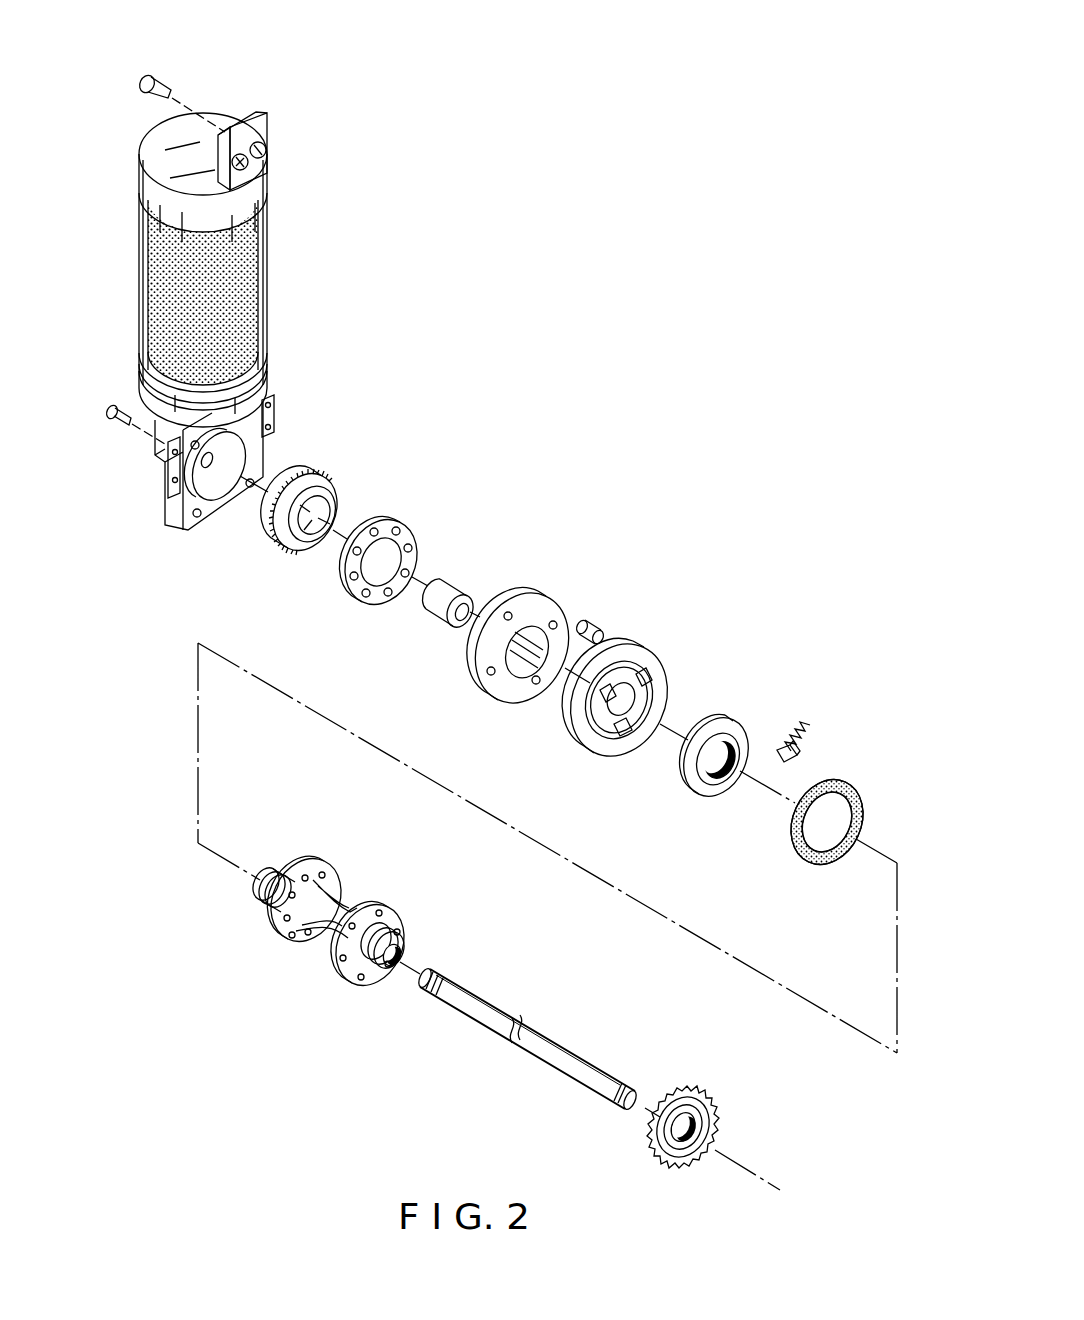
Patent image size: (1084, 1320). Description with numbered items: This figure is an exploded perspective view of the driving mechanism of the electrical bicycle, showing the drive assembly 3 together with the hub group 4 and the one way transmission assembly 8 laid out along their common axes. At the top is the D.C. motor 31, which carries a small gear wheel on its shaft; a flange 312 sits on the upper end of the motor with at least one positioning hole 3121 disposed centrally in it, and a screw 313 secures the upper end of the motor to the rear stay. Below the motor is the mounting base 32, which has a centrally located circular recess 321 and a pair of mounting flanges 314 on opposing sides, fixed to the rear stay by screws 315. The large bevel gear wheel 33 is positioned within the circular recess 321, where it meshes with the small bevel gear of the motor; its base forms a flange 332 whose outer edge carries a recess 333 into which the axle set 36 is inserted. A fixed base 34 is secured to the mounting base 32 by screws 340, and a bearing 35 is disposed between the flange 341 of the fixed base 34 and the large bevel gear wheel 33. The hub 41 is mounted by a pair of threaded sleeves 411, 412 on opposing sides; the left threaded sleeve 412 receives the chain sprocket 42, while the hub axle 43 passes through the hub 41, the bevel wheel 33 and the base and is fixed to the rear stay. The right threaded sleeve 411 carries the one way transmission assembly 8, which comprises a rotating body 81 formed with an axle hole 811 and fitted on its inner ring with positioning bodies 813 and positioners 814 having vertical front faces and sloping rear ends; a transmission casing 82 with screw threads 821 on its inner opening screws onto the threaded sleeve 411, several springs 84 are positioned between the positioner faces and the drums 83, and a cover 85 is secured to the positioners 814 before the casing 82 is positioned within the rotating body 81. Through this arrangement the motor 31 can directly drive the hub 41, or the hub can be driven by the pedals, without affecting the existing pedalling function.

The drive assembly 3 is at (490, 723).
The D.C. motor 31 is at (257, 250).
The flange 312 is at (267, 120).
The positioning hole 3121 is at (268, 149).
The screw 313 is at (156, 78).
The mounting flanges 314 is at (268, 405).
The screws 315 is at (112, 420).
The mounting base 32 is at (253, 452).
The circular recess 321 is at (222, 478).
The large bevel gear wheel 33 is at (293, 473).
The flange 332 is at (332, 497).
The recess 333 is at (342, 520).
The fixed base 34 is at (537, 607).
The screws 340 is at (588, 623).
The flange 341 is at (503, 597).
The bearing 35 is at (410, 533).
The axle set 36 is at (457, 580).
The one way transmission assembly 8 is at (820, 910).
The rotating body 81 is at (640, 647).
The axle hole 811 is at (632, 707).
The pawl 813 is at (640, 685).
The positioners 814 is at (622, 745).
The transmission casing 82 is at (720, 713).
The screw threads 821 is at (720, 787).
The drums 83 is at (797, 752).
The springs 84 is at (801, 721).
The cover 85 is at (837, 780).
The wheel hub assembly 4 is at (677, 1187).
The hub 41 is at (340, 900).
The threaded sleeve 411 is at (277, 863).
The threaded sleeve 412 is at (400, 942).
The chain sprocket 42 is at (697, 1093).
The hub axle 43 is at (548, 1048).